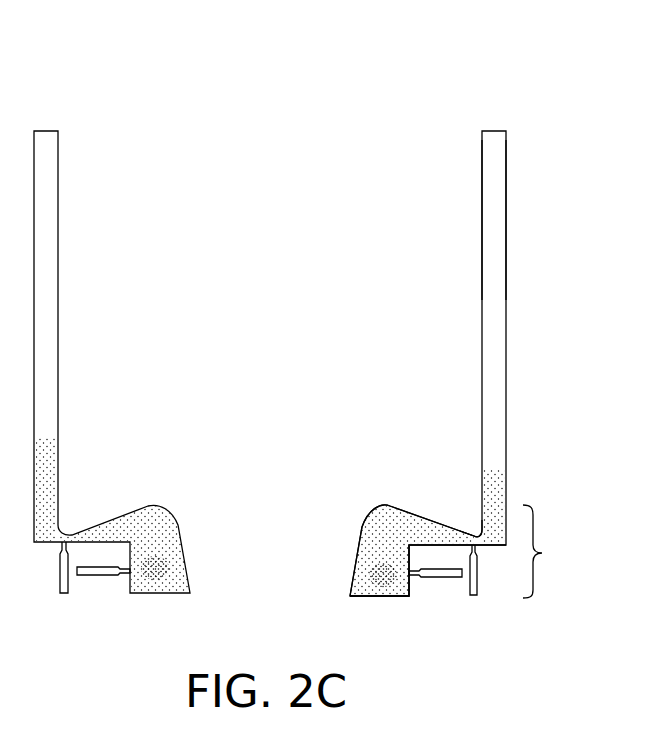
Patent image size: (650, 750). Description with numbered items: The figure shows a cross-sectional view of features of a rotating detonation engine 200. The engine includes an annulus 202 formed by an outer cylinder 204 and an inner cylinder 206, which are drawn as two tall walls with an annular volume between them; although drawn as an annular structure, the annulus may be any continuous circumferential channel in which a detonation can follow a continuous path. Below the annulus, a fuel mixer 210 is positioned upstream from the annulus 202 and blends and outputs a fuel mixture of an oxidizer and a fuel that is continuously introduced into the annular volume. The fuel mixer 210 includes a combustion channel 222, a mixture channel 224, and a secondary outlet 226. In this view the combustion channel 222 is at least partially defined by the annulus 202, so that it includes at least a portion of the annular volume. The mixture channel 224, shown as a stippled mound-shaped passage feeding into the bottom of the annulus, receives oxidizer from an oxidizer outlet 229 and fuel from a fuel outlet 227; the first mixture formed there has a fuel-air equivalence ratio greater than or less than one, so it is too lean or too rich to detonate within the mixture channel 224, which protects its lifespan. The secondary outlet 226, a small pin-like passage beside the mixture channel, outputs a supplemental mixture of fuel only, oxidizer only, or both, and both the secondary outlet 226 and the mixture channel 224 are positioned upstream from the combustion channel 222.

The rotating detonation engine 200 is at (560, 80).
The annulus 202 is at (517, 215).
The outer cylinder 204 is at (506, 281).
The inner cylinder 206 is at (482, 265).
The fuel mixer 210 is at (568, 551).
The combustion channel 222 is at (479, 532).
The mixture channel 224 is at (368, 523).
The secondary outlet 226 is at (482, 573).
The fuel outlet 227 is at (442, 577).
The oxidizer outlet 229 is at (373, 597).